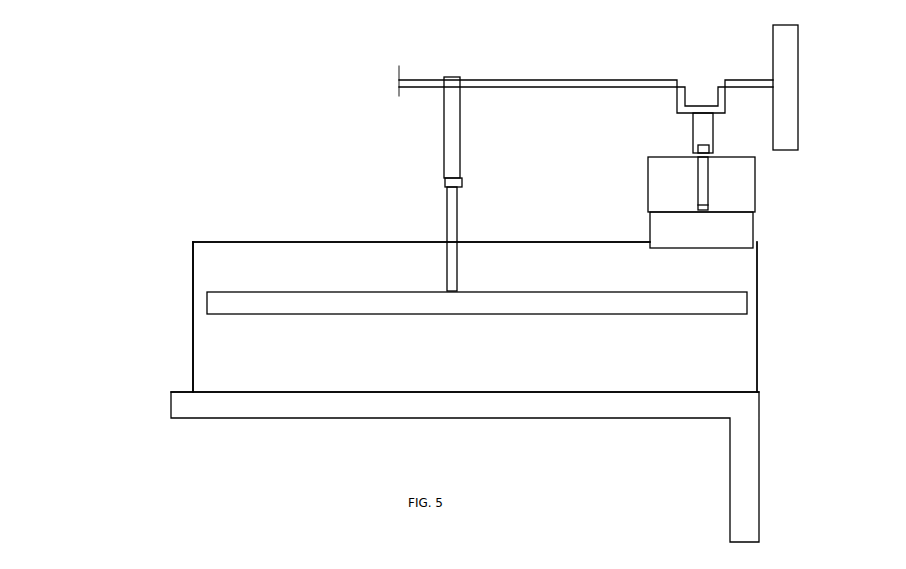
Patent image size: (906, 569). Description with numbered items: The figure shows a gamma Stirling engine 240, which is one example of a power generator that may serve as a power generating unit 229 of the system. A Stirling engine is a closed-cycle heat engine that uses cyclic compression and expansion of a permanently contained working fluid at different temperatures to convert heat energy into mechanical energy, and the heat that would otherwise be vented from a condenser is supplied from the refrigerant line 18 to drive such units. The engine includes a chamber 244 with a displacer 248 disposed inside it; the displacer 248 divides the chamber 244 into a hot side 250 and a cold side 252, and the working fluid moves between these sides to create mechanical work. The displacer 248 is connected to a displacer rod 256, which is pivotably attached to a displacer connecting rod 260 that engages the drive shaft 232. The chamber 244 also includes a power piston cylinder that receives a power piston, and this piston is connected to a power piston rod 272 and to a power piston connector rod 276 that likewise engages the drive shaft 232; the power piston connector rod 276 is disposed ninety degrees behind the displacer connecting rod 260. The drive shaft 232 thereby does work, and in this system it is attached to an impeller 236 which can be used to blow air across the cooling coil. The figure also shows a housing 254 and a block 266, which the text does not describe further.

The refrigerant line 18 is at (737, 440).
The power generating unit 229 is at (192, 240).
The drive shaft 232 is at (535, 80).
The impeller 236 is at (788, 112).
The gamma Stirling engine 240 is at (193, 280).
The chamber 244 is at (295, 363).
The displacer 248 is at (230, 303).
The hot side 250 is at (360, 362).
The cold side 252 is at (285, 262).
The actuator housing 254 is at (745, 190).
The displacer rod 256 is at (453, 212).
The displacer connecting rod 260 is at (450, 130).
The actuator block 266 is at (723, 237).
The power piston rod 272 is at (705, 180).
The power piston connector rod 276 is at (703, 132).